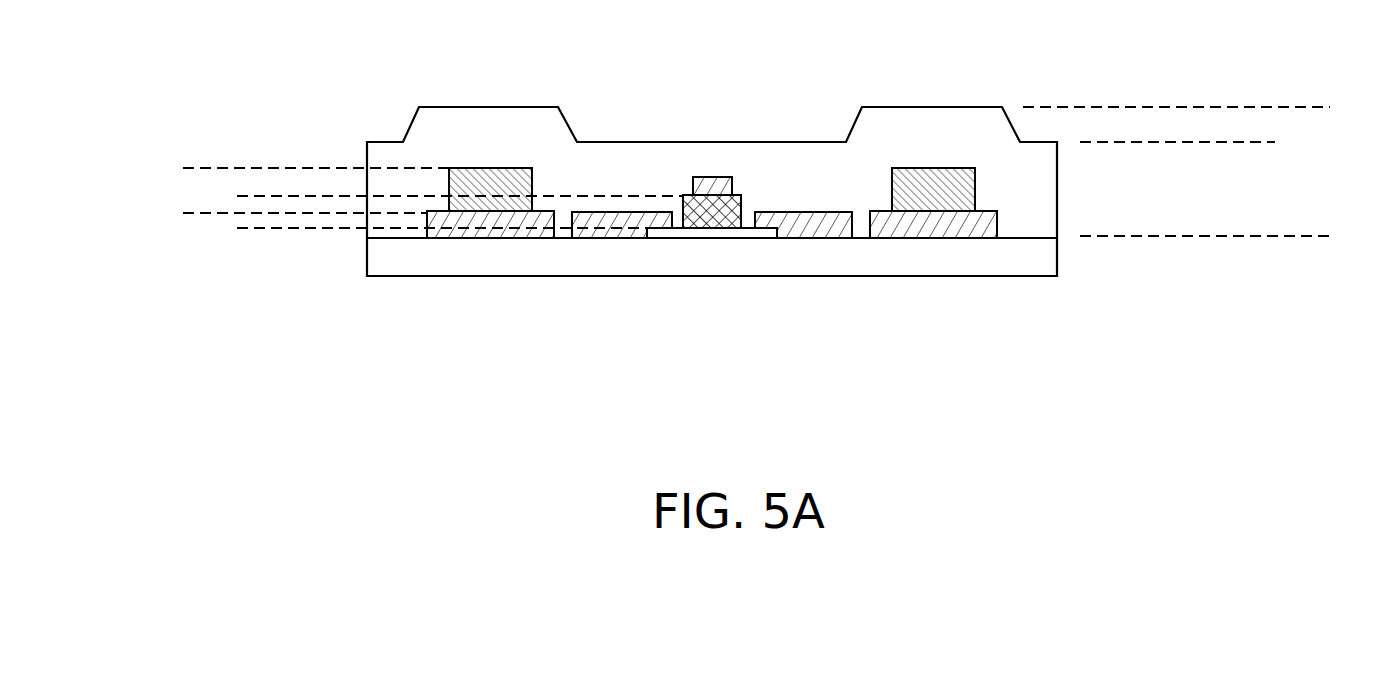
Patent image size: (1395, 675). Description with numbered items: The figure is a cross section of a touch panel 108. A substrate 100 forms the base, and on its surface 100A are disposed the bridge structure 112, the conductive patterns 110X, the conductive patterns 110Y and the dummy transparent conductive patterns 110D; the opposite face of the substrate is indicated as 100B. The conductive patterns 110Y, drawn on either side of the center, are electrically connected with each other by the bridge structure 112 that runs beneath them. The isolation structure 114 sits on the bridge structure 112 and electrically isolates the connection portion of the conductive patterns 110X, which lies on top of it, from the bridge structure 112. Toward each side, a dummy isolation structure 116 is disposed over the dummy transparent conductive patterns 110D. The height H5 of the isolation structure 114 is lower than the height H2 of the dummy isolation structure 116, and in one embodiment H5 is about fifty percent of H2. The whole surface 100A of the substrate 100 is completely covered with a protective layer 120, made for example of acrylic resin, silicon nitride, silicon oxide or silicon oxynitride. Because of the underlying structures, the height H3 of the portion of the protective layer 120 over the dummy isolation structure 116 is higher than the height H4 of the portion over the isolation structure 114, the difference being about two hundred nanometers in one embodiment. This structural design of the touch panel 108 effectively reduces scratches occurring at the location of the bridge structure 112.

The substrate 100 is at (1043, 256).
The surface of the substrate 100A is at (1026, 235).
The bottom surface of substrate 100B is at (1029, 278).
The touch panel 108 is at (1168, 105).
The dummy transparent conductive patterns 110D is at (490, 237).
The conductive patterns 110Y is at (617, 237).
The conductive patterns 110X is at (712, 178).
The bridge structure 112 is at (717, 237).
The isolation structure 114 is at (742, 203).
The dummy isolation structure 116 is at (500, 172).
The protective layer 120 is at (1043, 178).
The height of the dummy isolation structure H2 is at (179, 169).
The height of the protective layer portion over the dummy isolation structure H3 is at (1322, 108).
The height of the protective layer portion over the isolation structure H4 is at (1268, 235).
The height of the isolation structure H5 is at (247, 170).